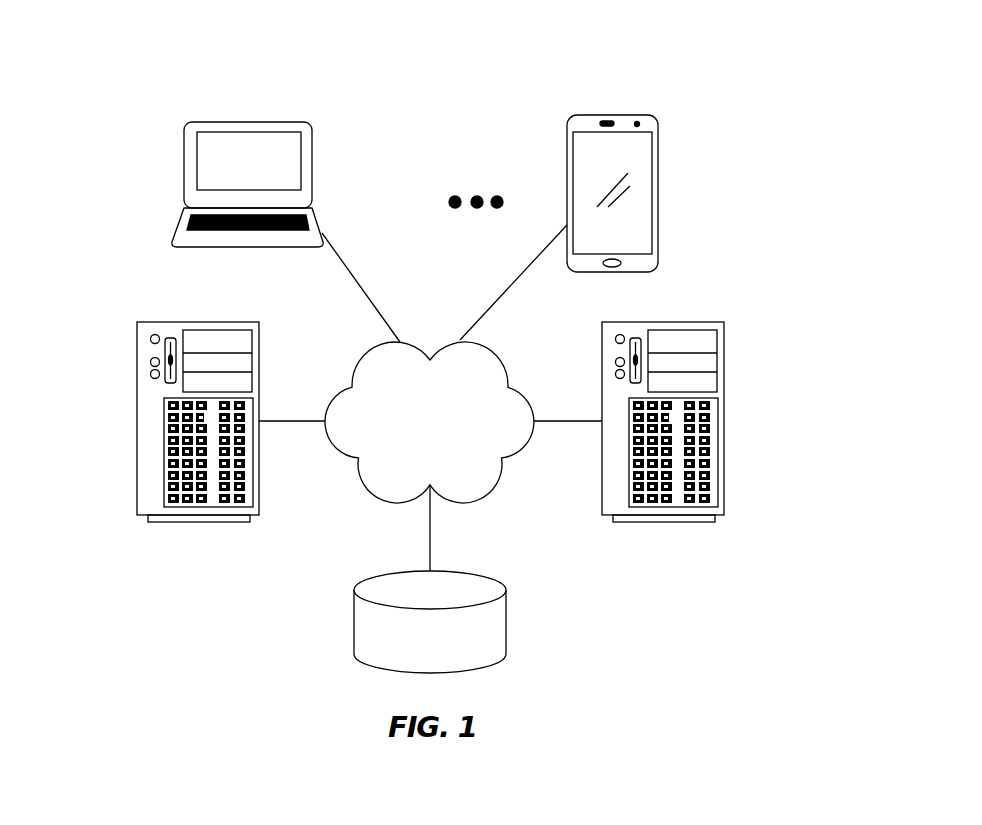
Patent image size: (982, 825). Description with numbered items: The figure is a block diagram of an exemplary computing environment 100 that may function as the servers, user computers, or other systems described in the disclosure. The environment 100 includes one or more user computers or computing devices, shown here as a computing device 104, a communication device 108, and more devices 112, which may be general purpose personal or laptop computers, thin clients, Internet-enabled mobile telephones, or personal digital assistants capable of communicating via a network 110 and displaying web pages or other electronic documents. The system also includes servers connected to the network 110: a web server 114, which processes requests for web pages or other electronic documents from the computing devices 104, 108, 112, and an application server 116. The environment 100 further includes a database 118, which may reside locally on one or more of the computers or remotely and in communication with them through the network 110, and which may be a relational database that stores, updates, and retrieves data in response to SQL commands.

The computing environment 100 is at (710, 54).
The computing device 104 is at (185, 166).
The communication device 108 is at (658, 192).
The network 110 is at (482, 496).
The additional computing devices 112 is at (476, 194).
The web server 114 is at (137, 421).
The application server 116 is at (723, 421).
The database 118 is at (506, 623).